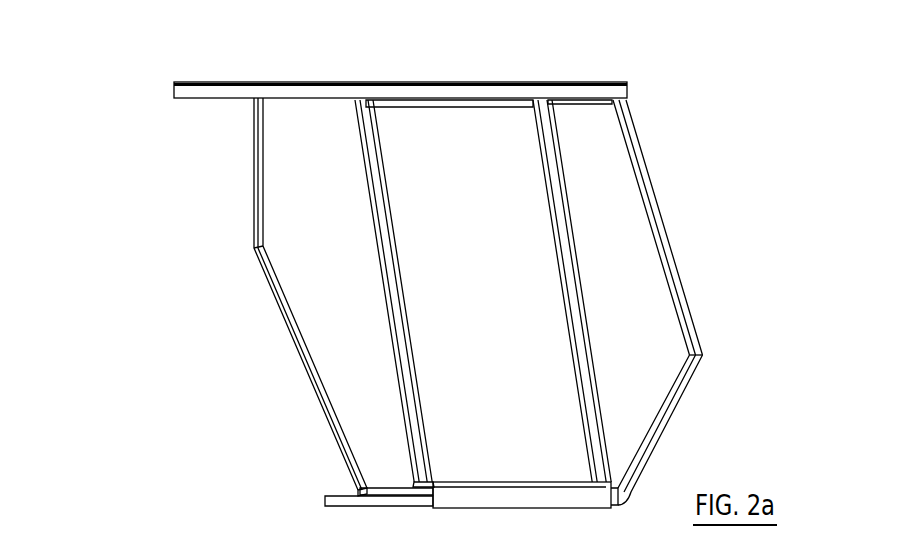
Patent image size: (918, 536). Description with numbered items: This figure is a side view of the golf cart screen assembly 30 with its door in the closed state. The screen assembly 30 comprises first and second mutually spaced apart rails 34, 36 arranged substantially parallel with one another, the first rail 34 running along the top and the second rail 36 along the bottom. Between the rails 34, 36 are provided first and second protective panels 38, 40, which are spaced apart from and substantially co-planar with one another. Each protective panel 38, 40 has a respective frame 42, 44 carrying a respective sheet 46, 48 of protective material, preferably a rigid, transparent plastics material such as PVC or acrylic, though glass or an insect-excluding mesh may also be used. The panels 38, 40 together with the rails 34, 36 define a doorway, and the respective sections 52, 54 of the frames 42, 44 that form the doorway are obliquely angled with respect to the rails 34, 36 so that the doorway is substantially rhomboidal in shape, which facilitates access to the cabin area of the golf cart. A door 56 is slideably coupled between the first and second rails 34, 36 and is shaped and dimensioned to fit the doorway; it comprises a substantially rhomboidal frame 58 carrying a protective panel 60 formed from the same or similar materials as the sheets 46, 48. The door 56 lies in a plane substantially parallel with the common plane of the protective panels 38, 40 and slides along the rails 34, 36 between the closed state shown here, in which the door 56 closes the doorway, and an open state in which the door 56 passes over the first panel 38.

The screen assembly 30 is at (697, 118).
The first rail member 34 is at (186, 90).
The second rail member 36 is at (328, 500).
The first protective panel member 38 is at (253, 185).
The second protective panel member 40 is at (641, 145).
The frame of first protective panel 42 is at (270, 282).
The frame of second protective panel 44 is at (665, 238).
The sheet of protective material 46 is at (328, 256).
The sheet of protective material 48 is at (630, 303).
The section of frame forming doorway 52 is at (393, 327).
The section of frame forming doorway 54 is at (590, 325).
The door 56 is at (406, 384).
The frame of door 58 is at (588, 390).
The protective panel of door 60 is at (482, 256).